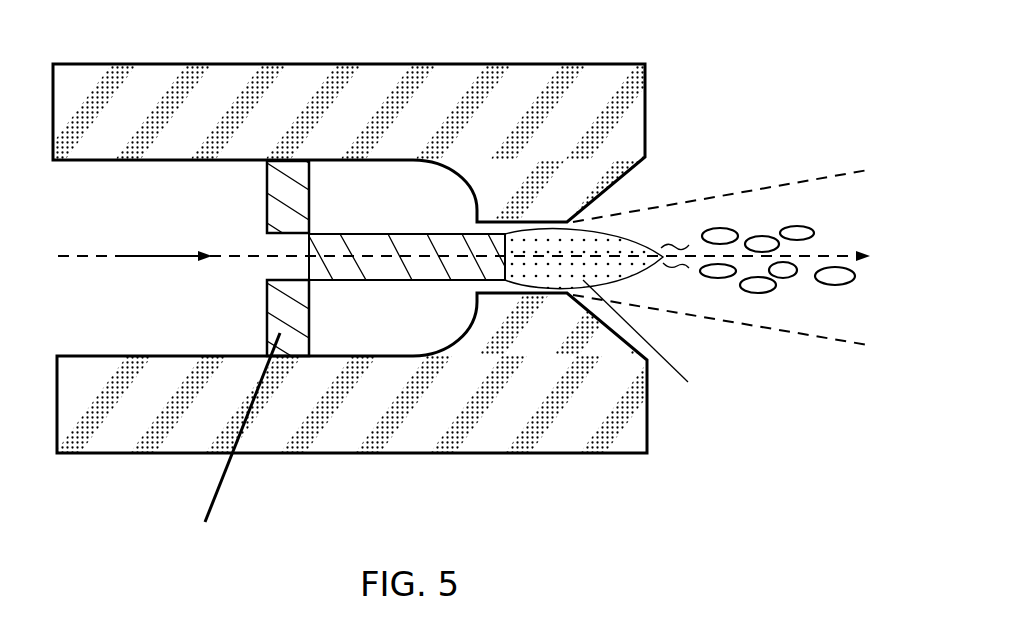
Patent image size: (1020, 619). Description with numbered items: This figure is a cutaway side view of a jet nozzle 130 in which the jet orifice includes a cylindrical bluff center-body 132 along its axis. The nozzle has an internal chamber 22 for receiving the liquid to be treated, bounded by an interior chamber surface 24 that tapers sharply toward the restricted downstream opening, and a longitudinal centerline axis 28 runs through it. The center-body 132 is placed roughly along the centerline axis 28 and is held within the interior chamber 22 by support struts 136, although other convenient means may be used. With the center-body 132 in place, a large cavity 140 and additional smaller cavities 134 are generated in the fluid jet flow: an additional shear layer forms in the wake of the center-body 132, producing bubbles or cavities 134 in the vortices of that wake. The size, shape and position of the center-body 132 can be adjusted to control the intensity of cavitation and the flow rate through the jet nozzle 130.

The internal chamber 22 is at (142, 298).
The interior chamber surface 24 is at (507, 103).
The longitudinal centerline axis 28 is at (78, 250).
The jet nozzle 130 is at (58, 482).
The center-body 132 is at (370, 263).
The smaller cavities 134 is at (716, 274).
The support struts 136 is at (282, 197).
The large cavity 140 is at (572, 258).